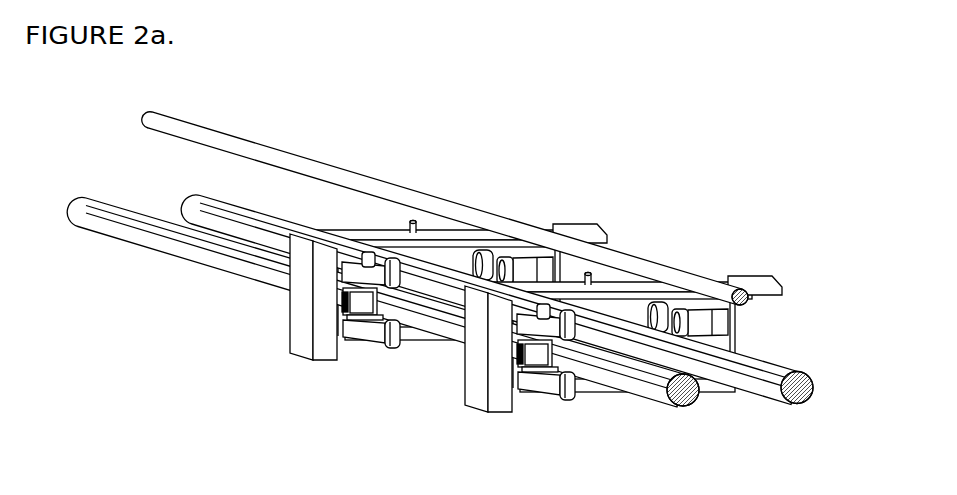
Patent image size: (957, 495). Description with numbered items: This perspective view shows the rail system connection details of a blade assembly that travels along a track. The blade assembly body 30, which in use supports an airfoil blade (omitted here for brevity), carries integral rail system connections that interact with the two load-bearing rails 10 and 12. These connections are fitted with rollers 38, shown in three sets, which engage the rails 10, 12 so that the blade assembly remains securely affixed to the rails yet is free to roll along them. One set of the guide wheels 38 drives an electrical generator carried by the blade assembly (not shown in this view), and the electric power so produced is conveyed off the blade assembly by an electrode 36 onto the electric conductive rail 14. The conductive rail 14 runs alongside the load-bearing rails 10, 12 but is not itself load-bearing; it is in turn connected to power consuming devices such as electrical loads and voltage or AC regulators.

The rail 10 is at (257, 229).
The rail 12 is at (118, 233).
The electric conductive rail 14 is at (360, 170).
The blade assembly body 30 is at (304, 323).
The electrode 36 is at (669, 259).
The rollers 38 is at (392, 353).